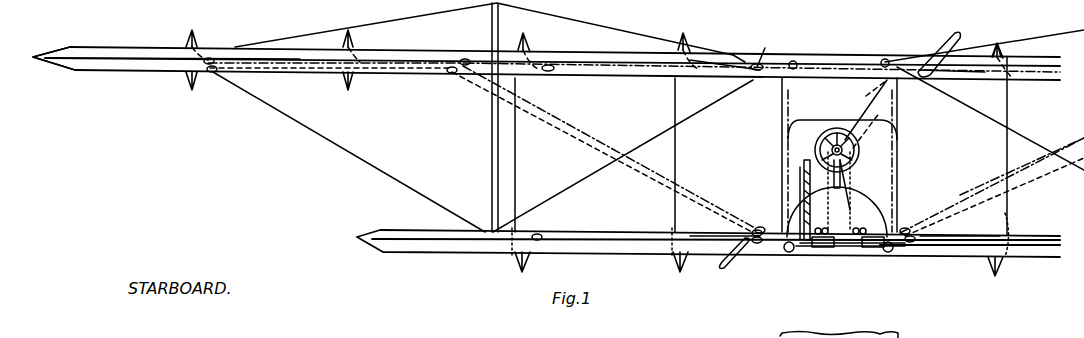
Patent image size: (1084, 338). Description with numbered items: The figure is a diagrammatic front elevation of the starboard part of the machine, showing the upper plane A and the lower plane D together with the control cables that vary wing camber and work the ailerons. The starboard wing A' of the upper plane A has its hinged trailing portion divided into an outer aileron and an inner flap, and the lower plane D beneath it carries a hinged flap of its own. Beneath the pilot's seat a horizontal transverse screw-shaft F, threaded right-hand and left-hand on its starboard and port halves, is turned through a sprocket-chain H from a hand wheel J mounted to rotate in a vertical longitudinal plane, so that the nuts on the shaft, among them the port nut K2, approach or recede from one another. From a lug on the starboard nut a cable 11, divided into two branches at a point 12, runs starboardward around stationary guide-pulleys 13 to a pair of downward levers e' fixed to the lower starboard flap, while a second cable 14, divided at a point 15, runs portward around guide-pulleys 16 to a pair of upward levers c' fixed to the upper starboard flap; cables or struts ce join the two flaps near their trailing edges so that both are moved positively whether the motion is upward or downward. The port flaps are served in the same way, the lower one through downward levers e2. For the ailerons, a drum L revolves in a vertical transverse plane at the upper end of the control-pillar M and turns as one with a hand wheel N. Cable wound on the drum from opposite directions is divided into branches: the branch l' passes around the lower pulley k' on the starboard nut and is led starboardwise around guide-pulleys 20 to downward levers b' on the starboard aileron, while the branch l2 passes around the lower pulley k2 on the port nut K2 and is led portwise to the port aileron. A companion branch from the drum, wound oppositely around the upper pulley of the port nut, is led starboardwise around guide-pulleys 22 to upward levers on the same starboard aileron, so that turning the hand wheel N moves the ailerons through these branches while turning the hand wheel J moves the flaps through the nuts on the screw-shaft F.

The upper plane A is at (546, 56).
The wing of the upper plane A' is at (166, 48).
The cable branch l' is at (481, 150).
The cables or struts ce is at (515, 153).
The cable 14 is at (622, 66).
The levers b' is at (301, 169).
The levers c' is at (618, 46).
The stationary guide-pulleys 22 is at (211, 58).
The stationary guide-pulleys 20 is at (212, 73).
The stationary guide-pulleys 16 is at (553, 72).
The dividing point 15 is at (738, 70).
The cable 11 is at (608, 236).
The dividing point 12 is at (726, 236).
The levers e' is at (588, 251).
The levers e2 is at (1000, 272).
The stationary guide-pulleys 13 is at (541, 240).
The lower plane D is at (942, 258).
The drum L is at (836, 128).
The hand wheel N is at (866, 118).
The control-pillar M is at (848, 176).
The hand wheel J is at (805, 165).
The sprocket-chain H is at (800, 178).
The guide-pulley k' is at (817, 253).
The screw-shaft F is at (838, 250).
The port nut K2 is at (868, 250).
The guide-pulley k2 is at (890, 252).
The cable branch l2 is at (1050, 168).